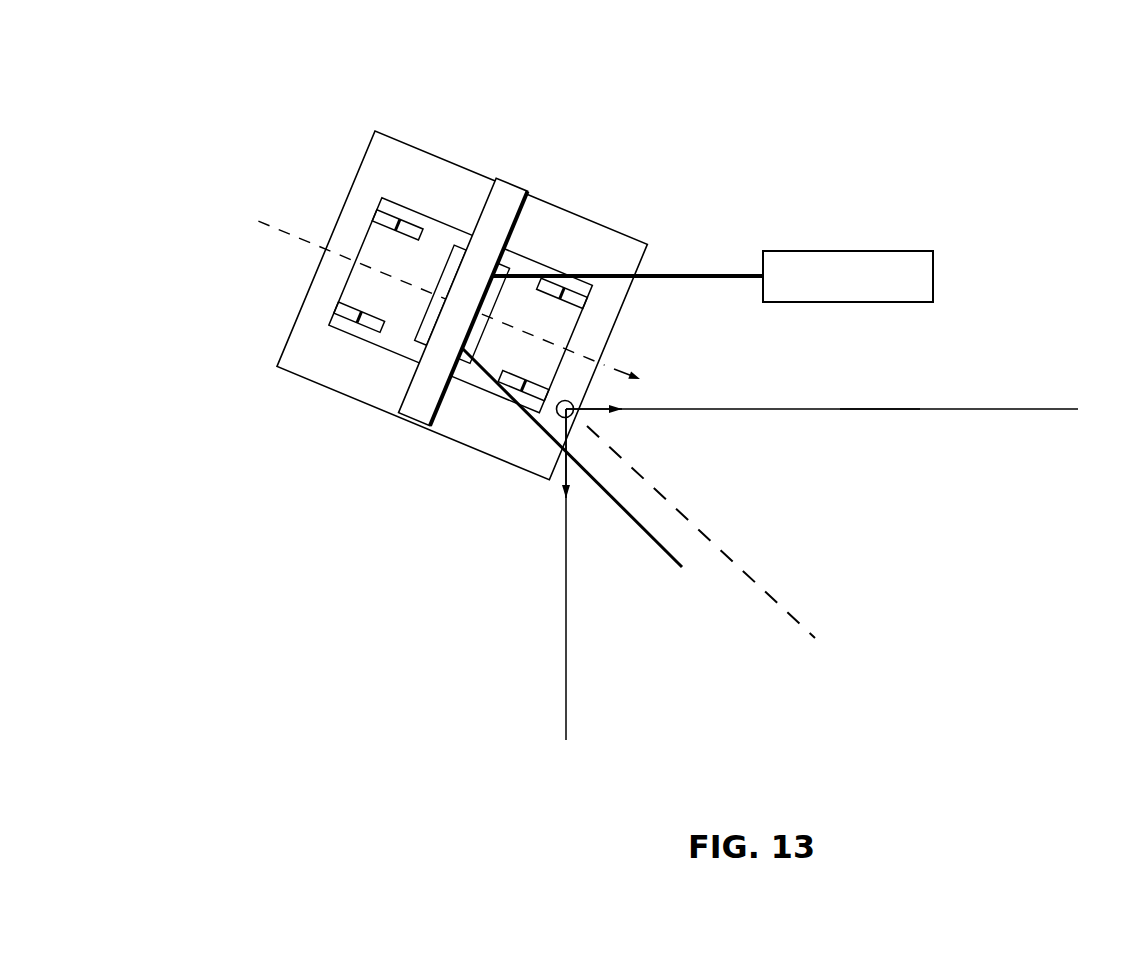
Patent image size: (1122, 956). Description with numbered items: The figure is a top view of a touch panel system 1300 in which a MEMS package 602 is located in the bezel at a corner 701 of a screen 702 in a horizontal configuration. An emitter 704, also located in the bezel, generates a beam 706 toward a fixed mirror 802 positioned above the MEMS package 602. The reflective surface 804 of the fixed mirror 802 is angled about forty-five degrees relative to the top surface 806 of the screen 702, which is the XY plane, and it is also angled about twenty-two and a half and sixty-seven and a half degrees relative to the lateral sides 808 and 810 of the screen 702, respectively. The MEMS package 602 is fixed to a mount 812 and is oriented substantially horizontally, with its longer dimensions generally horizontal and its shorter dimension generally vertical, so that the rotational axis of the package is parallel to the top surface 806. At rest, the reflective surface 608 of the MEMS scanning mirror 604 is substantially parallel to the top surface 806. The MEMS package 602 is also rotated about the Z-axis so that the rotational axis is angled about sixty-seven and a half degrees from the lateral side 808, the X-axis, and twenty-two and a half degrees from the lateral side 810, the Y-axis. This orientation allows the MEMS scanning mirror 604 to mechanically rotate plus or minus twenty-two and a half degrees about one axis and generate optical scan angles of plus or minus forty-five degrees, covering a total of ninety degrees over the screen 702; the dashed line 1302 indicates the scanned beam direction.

The touch panel system 1300 is at (206, 146).
The MEMS package 602 is at (375, 245).
The MEMS scanning mirror 604 is at (456, 240).
The reflective surface 608 is at (259, 222).
The fixed mirror 802 is at (507, 198).
The reflective surface 804 is at (525, 204).
The beam 706 is at (689, 276).
The emitter 704 is at (815, 250).
The corner 701 is at (566, 401).
The lateral side 810 is at (880, 409).
The screen 702 is at (968, 440).
The top surface 806 is at (1048, 494).
The lateral side 808 is at (566, 667).
The mount 812 is at (304, 348).
The reflected light beam 1302 is at (770, 597).